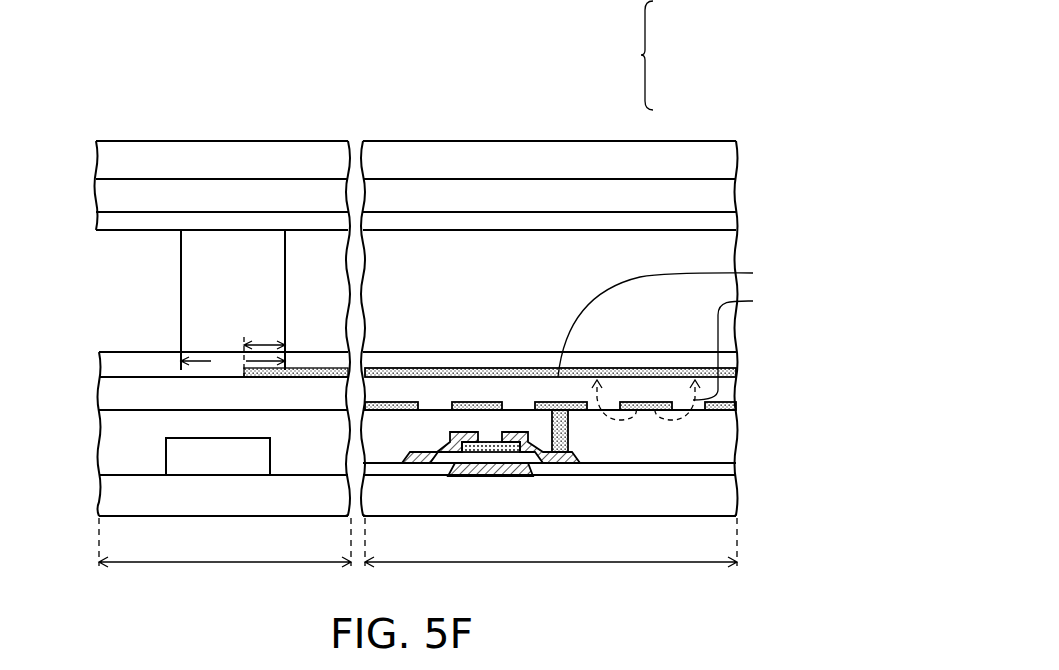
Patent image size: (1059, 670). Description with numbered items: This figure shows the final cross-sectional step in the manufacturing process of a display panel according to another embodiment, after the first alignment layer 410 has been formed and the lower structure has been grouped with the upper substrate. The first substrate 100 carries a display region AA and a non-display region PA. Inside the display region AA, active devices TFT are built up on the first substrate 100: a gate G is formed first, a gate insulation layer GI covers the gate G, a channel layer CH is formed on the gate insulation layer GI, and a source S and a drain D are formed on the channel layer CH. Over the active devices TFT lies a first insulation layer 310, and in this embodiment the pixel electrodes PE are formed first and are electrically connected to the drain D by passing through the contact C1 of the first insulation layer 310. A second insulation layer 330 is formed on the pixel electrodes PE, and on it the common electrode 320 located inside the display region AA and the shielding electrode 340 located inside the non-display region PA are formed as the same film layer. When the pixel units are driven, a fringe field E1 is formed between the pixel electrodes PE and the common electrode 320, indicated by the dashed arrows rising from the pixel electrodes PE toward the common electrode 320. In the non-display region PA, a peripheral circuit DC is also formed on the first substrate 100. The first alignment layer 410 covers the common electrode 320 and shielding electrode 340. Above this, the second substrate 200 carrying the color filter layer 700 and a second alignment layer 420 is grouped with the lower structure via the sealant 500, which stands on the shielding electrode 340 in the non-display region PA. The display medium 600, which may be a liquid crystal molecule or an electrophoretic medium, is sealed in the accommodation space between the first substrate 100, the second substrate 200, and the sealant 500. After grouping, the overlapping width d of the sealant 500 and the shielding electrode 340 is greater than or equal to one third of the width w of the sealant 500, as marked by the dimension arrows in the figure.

The first substrate 100 is at (727, 502).
The second substrate 200 is at (106, 162).
The color filter layer 700 is at (118, 198).
The second alignment layer 420 is at (110, 222).
The display medium 600 is at (717, 252).
The sealant 500 is at (193, 302).
The shielding electrode 340 is at (180, 374).
The first alignment layer 410 is at (741, 357).
The common electrode 320 is at (738, 373).
The second insulation layer 330 is at (727, 390).
The first insulation layer 310 is at (727, 446).
The pixel electrodes PE is at (737, 407).
The gate insulation layer GI is at (737, 470).
The peripheral circuit DC is at (176, 455).
The contact C1 is at (669, 316).
The fringe field E1 is at (686, 354).
The active devices TFT is at (644, 58).
The gate G is at (477, 478).
The source S is at (427, 464).
The drain D is at (560, 464).
The channel layer CH is at (505, 453).
The non-display region PA is at (225, 575).
The display region AA is at (551, 575).
The overlapping width d is at (264, 347).
The width of the sealant w is at (233, 361).